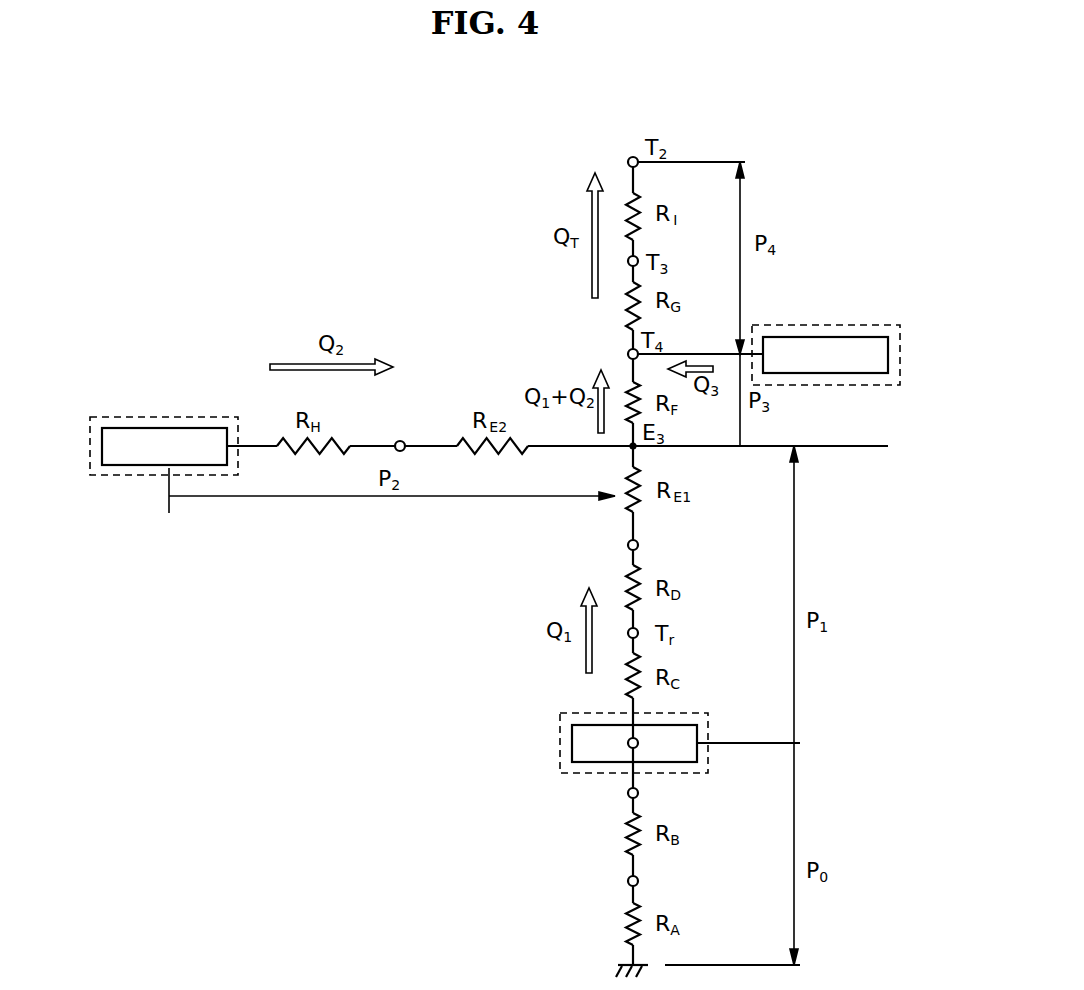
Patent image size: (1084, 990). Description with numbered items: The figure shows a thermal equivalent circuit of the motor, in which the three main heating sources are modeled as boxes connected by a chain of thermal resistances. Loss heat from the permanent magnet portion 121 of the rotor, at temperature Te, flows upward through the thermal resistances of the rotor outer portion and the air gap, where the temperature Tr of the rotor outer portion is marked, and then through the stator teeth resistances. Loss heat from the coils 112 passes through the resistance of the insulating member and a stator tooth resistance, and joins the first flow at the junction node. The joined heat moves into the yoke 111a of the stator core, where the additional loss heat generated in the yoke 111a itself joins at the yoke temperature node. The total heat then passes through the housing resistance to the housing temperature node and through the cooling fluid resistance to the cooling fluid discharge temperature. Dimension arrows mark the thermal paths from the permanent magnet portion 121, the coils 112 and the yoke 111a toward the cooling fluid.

The coils 112 is at (167, 417).
The yoke 111a is at (862, 325).
The permanent magnet portion 121 is at (560, 742).